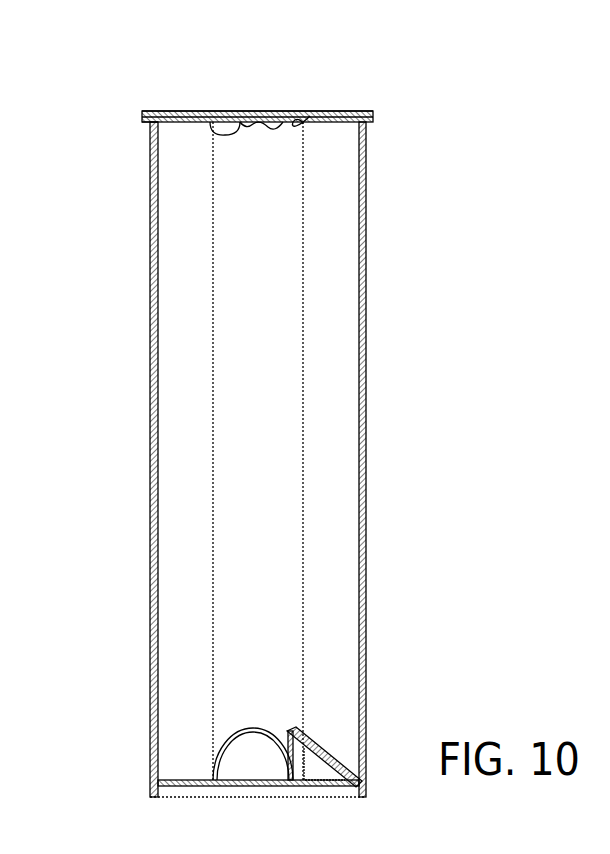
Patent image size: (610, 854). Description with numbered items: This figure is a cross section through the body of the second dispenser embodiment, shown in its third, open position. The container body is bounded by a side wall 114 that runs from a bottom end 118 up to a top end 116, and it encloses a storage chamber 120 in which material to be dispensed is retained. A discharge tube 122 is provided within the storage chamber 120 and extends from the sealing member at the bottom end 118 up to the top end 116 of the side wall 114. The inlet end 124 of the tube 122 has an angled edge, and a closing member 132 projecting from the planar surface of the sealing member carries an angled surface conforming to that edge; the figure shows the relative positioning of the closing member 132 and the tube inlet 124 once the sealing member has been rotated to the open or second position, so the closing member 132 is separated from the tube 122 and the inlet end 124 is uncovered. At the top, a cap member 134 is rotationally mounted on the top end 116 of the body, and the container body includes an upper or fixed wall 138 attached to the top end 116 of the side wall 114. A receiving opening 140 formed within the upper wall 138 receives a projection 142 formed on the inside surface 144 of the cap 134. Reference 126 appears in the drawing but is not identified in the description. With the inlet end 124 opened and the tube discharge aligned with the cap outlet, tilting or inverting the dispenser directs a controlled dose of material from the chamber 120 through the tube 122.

The side wall 114 is at (363, 507).
The top end 116 is at (155, 139).
The bottom end 118 is at (148, 772).
The storage chamber 120 is at (333, 352).
The discharge tube 122 is at (273, 467).
The inlet end 124 is at (263, 729).
The second partition 126 is at (303, 136).
The closing member 132 is at (330, 757).
The cap member 134 is at (340, 110).
The upper wall 138 is at (177, 126).
The receiving opening 140 is at (212, 118).
The projection 142 is at (265, 132).
The inside surface 144 is at (310, 116).